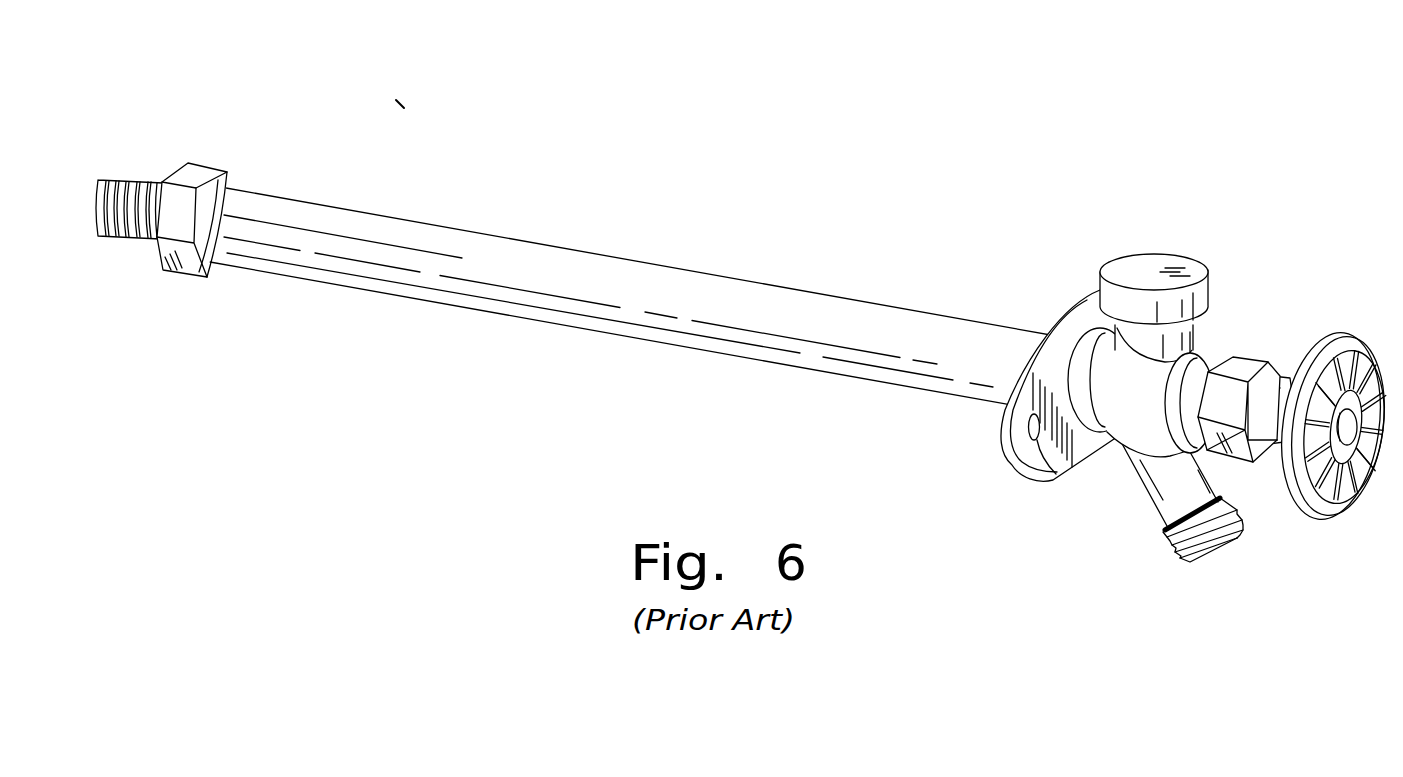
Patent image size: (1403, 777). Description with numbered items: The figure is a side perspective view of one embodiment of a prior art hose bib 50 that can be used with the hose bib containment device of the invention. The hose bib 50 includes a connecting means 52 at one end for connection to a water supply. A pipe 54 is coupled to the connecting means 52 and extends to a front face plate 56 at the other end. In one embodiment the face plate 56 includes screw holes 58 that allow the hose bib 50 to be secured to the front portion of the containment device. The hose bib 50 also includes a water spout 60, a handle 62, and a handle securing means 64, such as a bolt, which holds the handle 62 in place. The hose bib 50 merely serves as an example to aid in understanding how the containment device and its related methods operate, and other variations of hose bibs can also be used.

The hose bib 50 is at (406, 110).
The connecting means 52 is at (114, 177).
The pipe 54 is at (506, 247).
The front face plate 56 is at (1056, 358).
The screw holes 58 is at (1056, 476).
The water spout 60 is at (1162, 508).
The handle 62 is at (1338, 340).
The handle securing means 64 is at (1352, 472).